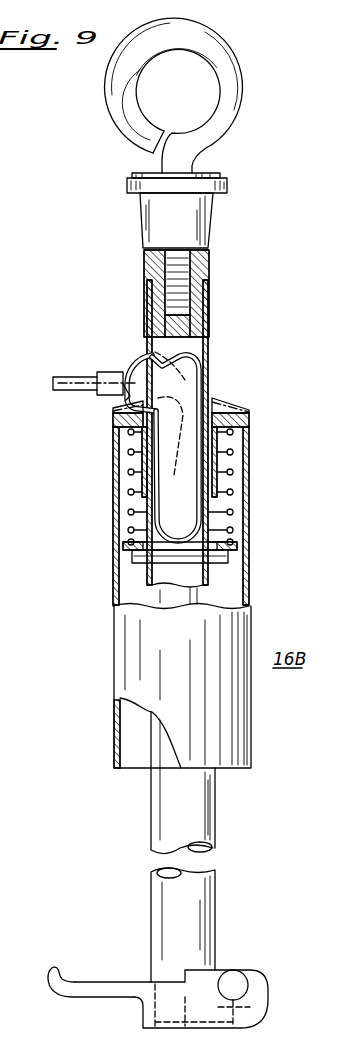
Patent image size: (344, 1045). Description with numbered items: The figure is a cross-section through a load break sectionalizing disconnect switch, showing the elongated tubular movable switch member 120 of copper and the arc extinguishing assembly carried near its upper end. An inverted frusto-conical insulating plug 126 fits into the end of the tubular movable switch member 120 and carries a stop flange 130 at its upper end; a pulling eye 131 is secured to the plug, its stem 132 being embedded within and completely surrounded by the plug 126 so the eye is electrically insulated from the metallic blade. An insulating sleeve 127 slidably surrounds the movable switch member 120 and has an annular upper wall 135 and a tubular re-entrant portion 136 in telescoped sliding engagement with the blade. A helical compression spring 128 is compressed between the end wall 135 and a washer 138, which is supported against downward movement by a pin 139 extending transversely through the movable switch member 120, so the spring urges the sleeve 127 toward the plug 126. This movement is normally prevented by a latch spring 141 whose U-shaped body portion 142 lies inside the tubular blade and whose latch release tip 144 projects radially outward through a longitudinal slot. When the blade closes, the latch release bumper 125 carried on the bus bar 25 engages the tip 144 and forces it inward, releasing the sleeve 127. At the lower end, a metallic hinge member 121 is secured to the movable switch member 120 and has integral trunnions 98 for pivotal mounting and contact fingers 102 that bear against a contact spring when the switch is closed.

The pulling eye 131 is at (226, 102).
The stop flange 130 is at (225, 184).
The inverted frusto-conical plug 126 is at (166, 229).
The stem 132 is at (195, 272).
The movable switch member 120 is at (210, 362).
The latch spring 141 is at (140, 354).
The U-shaped body portion 142 is at (200, 480).
The latch release bumper 125 is at (112, 375).
The bus bar 25 is at (85, 378).
The latch release tip 144 is at (122, 402).
The annular upper wall 135 is at (230, 412).
The insulating sleeve 127 is at (132, 656).
The helical compression spring 128 is at (132, 469).
The tubular re-entrant portion 136 is at (233, 464).
The washer 138 is at (240, 547).
The pin 139 is at (228, 558).
The hinge member 121 is at (260, 990).
The contact fingers 102 is at (48, 982).
The trunnions 98 is at (237, 978).